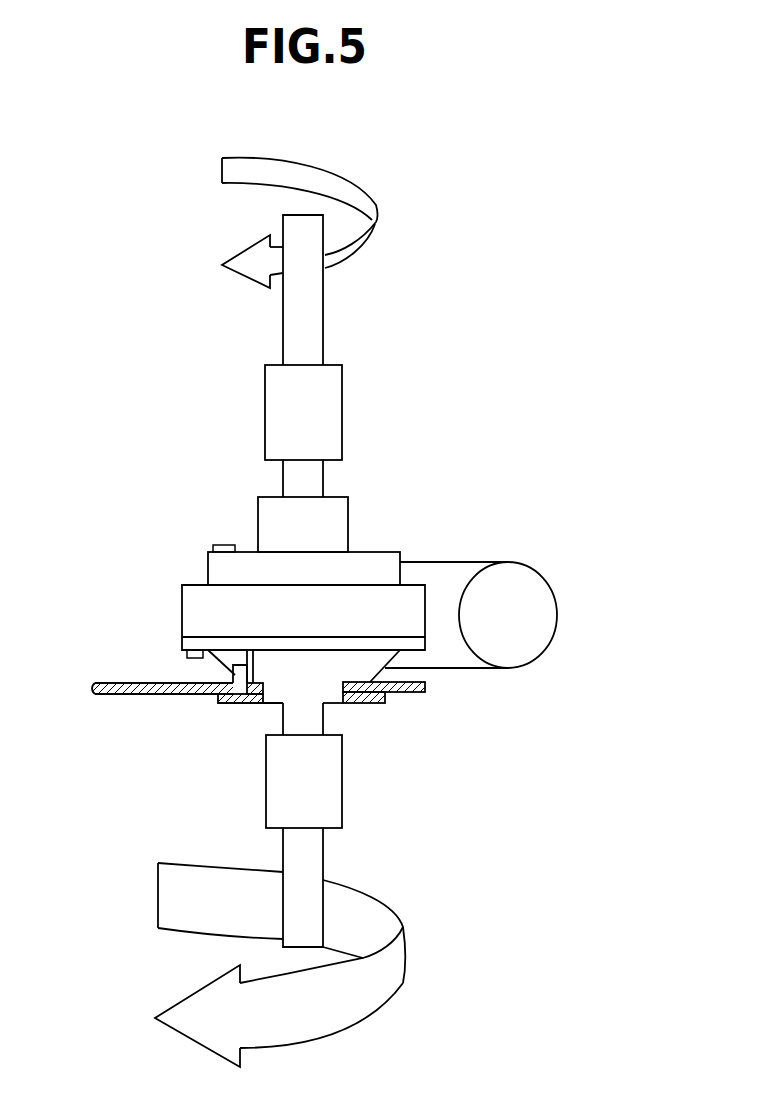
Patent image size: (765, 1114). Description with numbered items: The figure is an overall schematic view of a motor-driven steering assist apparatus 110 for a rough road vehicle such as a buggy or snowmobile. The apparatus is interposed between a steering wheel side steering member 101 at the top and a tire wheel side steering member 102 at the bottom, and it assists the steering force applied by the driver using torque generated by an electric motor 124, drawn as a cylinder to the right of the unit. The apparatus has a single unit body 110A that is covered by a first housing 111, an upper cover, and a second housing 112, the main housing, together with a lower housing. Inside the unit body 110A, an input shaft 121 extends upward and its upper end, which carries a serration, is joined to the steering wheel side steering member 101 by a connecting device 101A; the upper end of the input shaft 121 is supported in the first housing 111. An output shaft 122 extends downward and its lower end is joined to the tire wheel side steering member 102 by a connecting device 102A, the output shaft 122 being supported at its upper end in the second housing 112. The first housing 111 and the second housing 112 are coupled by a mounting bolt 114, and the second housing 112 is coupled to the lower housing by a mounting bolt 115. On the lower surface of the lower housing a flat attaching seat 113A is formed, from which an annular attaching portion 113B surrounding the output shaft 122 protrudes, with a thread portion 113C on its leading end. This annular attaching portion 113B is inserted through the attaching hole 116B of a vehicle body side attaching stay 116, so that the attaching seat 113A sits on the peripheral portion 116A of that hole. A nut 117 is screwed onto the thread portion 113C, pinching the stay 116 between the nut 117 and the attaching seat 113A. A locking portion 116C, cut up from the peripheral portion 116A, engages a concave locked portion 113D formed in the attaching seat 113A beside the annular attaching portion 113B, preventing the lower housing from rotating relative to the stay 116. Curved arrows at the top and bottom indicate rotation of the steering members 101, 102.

The steering wheel side steering member 101 is at (317, 292).
The connecting device 101A is at (332, 410).
The input shaft 121 is at (315, 477).
The first housing 111 is at (258, 520).
The motor-driven steering assist apparatus 110 is at (133, 500).
The unit body 110A is at (384, 536).
The mounting bolt 114 is at (222, 545).
The second housing 112 is at (212, 603).
The mounting bolt 115 is at (185, 657).
The locked portion 113D is at (237, 655).
The peripheral portion 116A is at (260, 680).
The attaching hole 116B is at (268, 687).
The locking portion 116C is at (180, 683).
The vehicle body side attaching stay 116 is at (110, 695).
The nut 117 is at (217, 703).
The thread portion 113C is at (247, 703).
The attaching seat 113A is at (423, 685).
The annular attaching portion 113B is at (382, 701).
The electric motor 124 is at (547, 618).
The output shaft 122 is at (312, 718).
The connecting device 102A is at (322, 780).
The tire wheel side steering member 102 is at (312, 860).